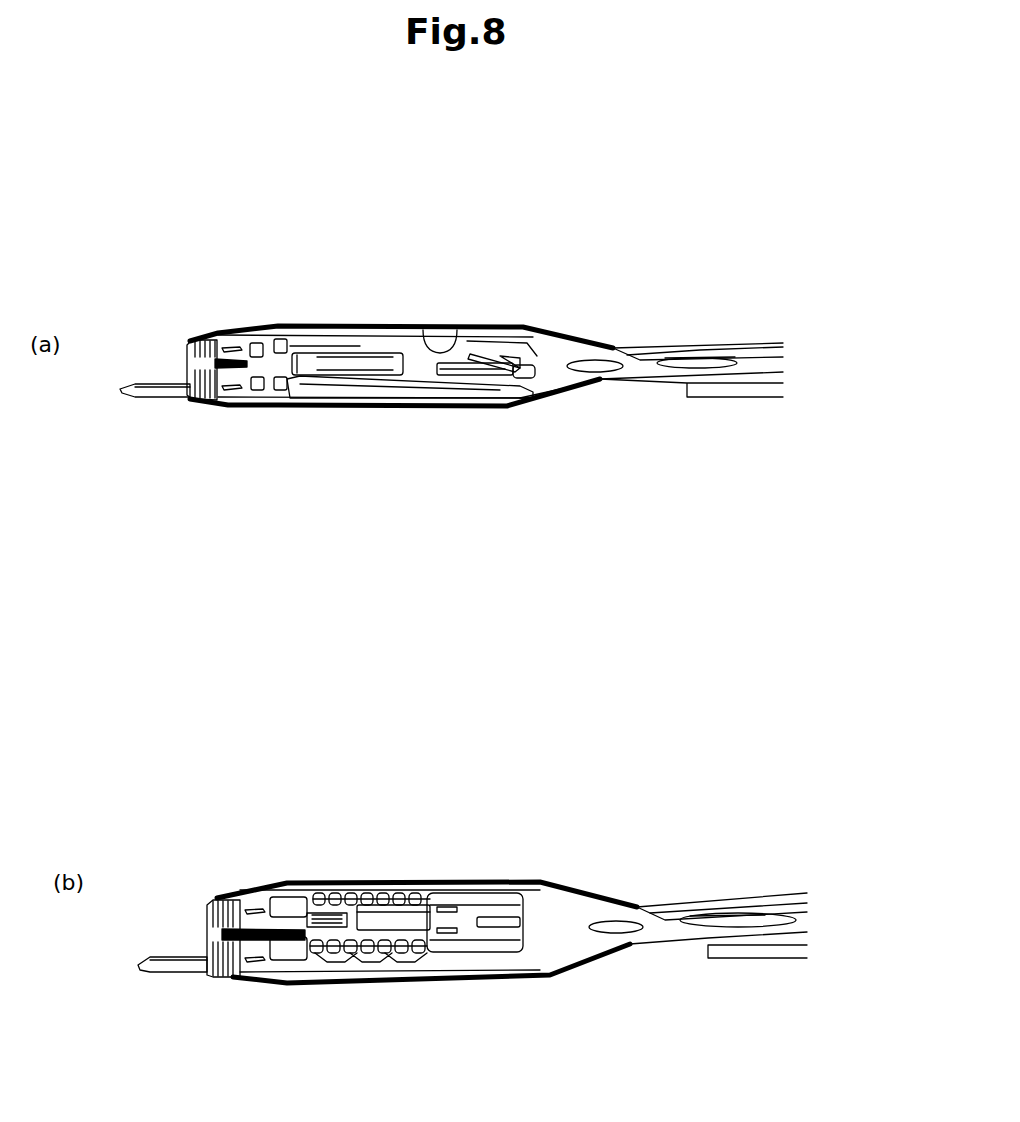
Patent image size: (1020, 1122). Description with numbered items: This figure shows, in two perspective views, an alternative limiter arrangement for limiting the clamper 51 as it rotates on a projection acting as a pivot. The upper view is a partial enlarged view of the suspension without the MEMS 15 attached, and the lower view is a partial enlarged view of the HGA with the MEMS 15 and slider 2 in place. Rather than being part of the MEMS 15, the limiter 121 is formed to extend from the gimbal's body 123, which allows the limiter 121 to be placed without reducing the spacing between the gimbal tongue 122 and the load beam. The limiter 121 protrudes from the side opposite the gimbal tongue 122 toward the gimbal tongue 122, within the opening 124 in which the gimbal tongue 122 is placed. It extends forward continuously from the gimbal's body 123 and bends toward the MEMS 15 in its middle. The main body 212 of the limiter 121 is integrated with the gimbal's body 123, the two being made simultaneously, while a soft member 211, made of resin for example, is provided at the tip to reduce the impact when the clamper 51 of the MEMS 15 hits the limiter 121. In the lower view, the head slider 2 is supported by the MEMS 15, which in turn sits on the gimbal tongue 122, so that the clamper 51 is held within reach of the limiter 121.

The limiter 121 is at (513, 213).
The gimbal tongue 122 is at (362, 352).
The gimbal's body 123 is at (512, 408).
The opening 124 is at (430, 352).
The soft member 211 is at (460, 355).
The main body of the limiter 212 is at (505, 355).
The MEMS 15 is at (281, 890).
The slider 2 is at (390, 895).
The clamper 51 is at (497, 892).